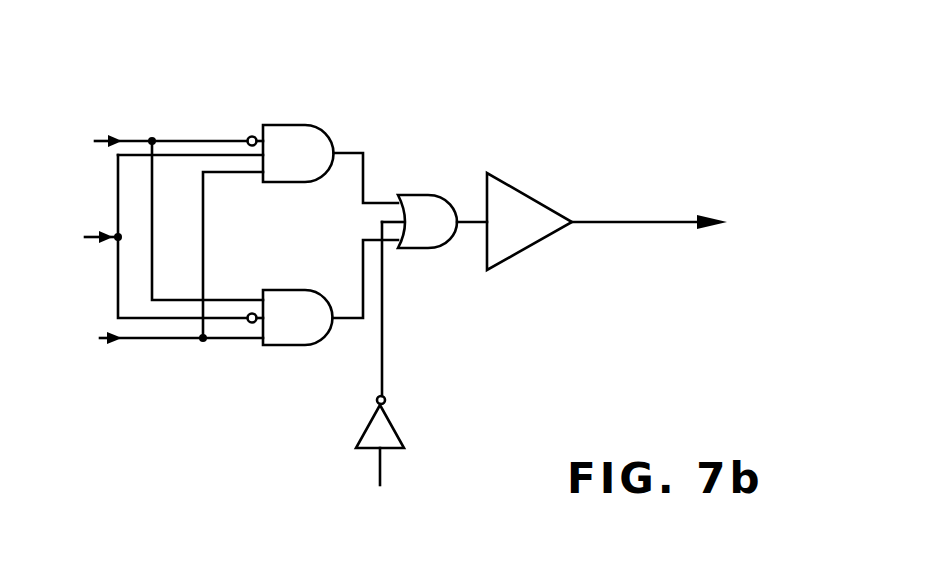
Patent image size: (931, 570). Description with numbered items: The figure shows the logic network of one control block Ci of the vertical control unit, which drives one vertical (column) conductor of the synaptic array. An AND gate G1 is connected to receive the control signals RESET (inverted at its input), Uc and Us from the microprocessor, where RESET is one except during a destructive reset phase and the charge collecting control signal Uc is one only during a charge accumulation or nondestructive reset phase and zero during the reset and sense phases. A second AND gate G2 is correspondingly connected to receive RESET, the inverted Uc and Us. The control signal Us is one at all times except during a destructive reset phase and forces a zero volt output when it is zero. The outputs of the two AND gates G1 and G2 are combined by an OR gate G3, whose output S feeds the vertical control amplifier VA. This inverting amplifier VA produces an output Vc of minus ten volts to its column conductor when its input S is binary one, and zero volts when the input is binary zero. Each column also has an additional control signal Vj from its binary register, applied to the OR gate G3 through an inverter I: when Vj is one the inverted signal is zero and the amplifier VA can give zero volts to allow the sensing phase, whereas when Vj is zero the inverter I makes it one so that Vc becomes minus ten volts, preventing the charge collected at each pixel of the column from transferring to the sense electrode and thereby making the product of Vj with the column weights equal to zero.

The reset control signal RESET is at (179, 203).
The charge collecting control signal Uc is at (156, 236).
The control signal Us is at (156, 266).
The AND gate G1 is at (318, 125).
The AND gate G2 is at (307, 345).
The OR gate G3 is at (416, 255).
The amplifier input signal S is at (470, 209).
The inverter I is at (400, 432).
The binary register signal Vj is at (402, 472).
The vertical control amplifier VA is at (529, 221).
The control output voltage Vc is at (697, 249).
The control block Ci is at (598, 161).